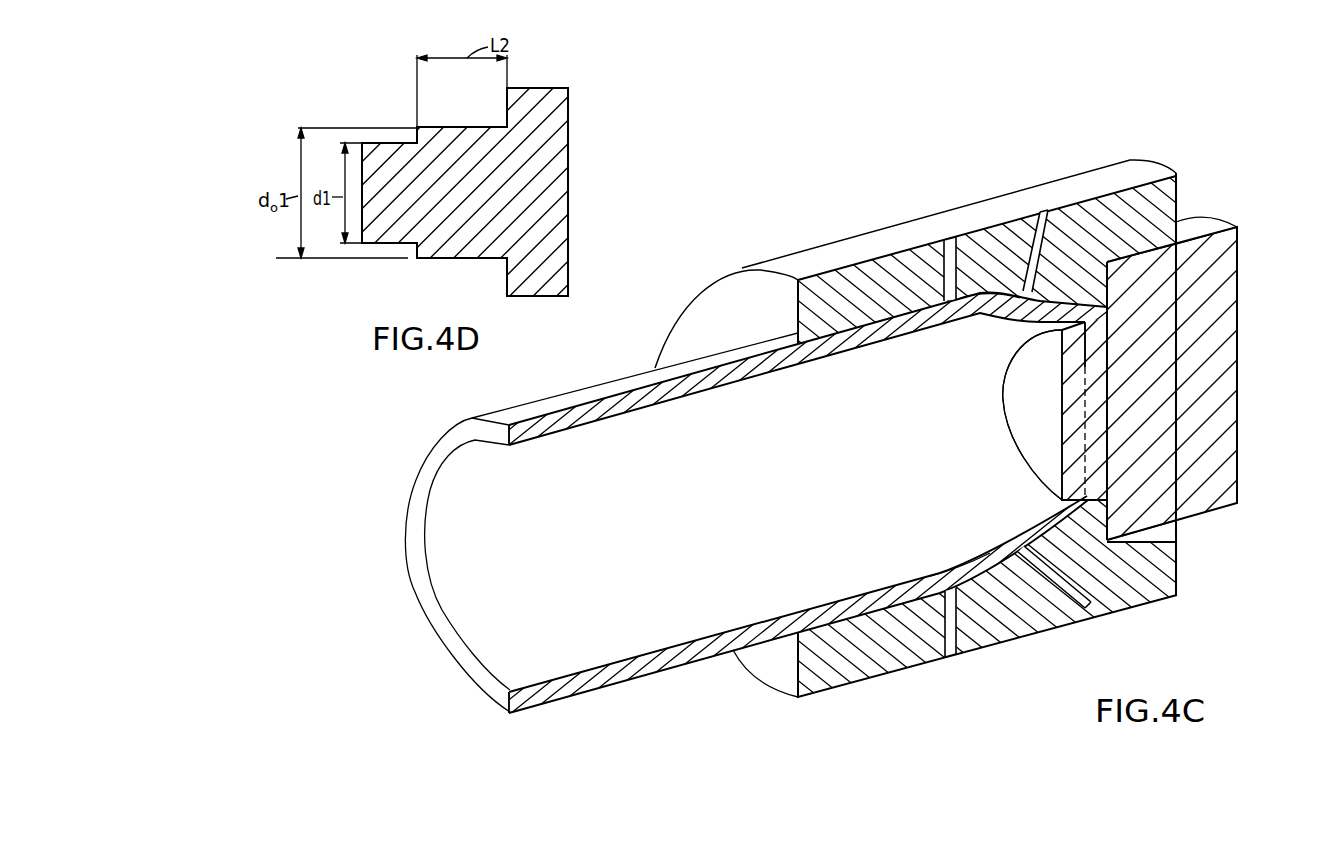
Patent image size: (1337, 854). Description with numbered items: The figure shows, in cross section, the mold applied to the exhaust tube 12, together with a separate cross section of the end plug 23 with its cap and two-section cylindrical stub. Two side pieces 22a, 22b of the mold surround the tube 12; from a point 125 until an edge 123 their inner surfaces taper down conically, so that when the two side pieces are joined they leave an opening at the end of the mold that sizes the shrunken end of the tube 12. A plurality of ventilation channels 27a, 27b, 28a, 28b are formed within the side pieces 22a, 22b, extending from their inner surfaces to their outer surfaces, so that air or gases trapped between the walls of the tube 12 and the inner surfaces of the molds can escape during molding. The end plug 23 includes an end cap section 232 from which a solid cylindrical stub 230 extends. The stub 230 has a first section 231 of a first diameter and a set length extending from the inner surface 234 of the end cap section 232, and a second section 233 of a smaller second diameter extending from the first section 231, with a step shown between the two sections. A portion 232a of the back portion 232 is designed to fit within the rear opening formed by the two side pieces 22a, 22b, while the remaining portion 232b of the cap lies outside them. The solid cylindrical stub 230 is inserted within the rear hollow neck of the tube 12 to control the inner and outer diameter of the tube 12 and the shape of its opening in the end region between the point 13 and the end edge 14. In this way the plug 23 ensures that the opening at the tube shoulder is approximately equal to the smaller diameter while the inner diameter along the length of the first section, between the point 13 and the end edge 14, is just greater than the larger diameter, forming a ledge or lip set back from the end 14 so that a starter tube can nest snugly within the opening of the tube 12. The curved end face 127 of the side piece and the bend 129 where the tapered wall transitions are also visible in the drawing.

In FIG. 4C, the tube 12 is at (592, 390).
In FIG. 4C, the point 13 is at (1062, 447).
In FIG. 4C, the end edge 14 is at (1086, 498).
In FIG. 4C, the end plug 23 is at (644, 81).
In FIG. 4C, the side piece 22a is at (927, 230).
In FIG. 4C, the side piece 22b is at (955, 598).
In FIG. 4C, the ventilation channel 27a is at (952, 250).
In FIG. 4C, the ventilation channel 27b is at (957, 640).
In FIG. 4C, the ventilation channel 28a is at (1043, 217).
In FIG. 4C, the ventilation channel 28b is at (1080, 604).
In FIG. 4C, the edge 123 is at (1003, 415).
In FIG. 4C, the point 125 is at (990, 316).
In FIG. 4C, the block end face 127 is at (793, 342).
In FIG. 4C, the bend transition 129 is at (995, 316).
In FIG. 4D, the solid cylindrical stub 230 is at (389, 134).
In FIG. 4C, the solid cylindrical stub 230 is at (1077, 383).
In FIG. 4D, the first section 231 is at (473, 238).
In FIG. 4D, the end cap section 232 is at (540, 89).
In FIG. 4C, the portion 232a is at (1140, 288).
In FIG. 4C, the plug flange outer part 232b is at (1207, 257).
In FIG. 4D, the second section 233 is at (388, 244).
In FIG. 4D, the inner surface 234 is at (507, 100).